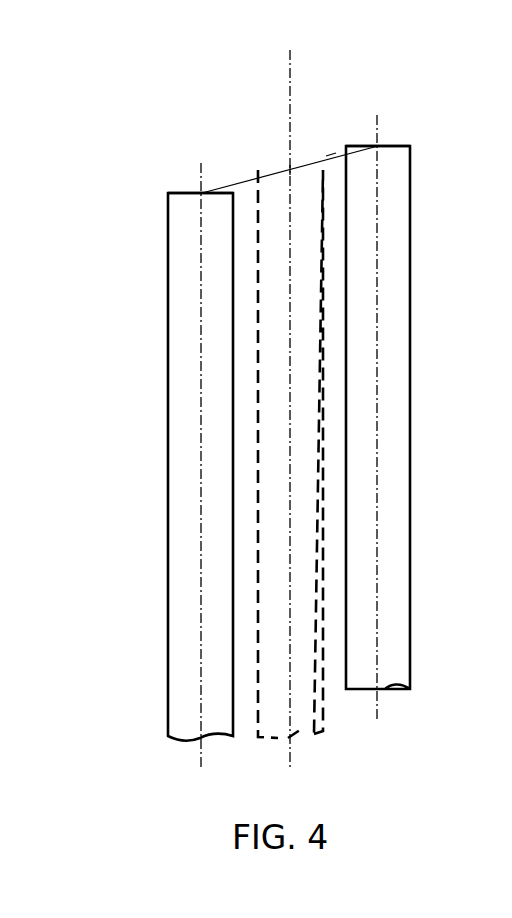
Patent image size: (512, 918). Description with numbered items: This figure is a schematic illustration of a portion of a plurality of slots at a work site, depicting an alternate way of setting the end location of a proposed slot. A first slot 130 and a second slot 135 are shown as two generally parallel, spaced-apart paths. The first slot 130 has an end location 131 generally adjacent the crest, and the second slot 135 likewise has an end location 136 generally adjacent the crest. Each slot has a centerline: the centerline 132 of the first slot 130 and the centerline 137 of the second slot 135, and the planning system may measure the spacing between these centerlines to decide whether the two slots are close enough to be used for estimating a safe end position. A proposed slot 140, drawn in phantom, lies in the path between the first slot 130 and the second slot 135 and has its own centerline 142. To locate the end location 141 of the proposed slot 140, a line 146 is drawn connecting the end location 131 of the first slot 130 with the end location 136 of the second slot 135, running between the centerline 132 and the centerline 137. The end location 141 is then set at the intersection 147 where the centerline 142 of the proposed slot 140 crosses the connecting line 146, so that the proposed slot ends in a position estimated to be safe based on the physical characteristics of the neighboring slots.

The first slot 130 is at (185, 550).
The end location of the first slot 131 is at (185, 193).
The centerline of the first slot 132 is at (200, 163).
The second slot 135 is at (390, 520).
The end location of the second slot 136 is at (395, 146).
The centerline of the second slot 137 is at (378, 115).
The proposed slot 140 is at (305, 473).
The end location of the proposed slot 141 is at (283, 166).
The centerline of the proposed slot 142 is at (292, 397).
The line connecting the end locations 146 is at (330, 159).
The intersection 147 is at (290, 170).